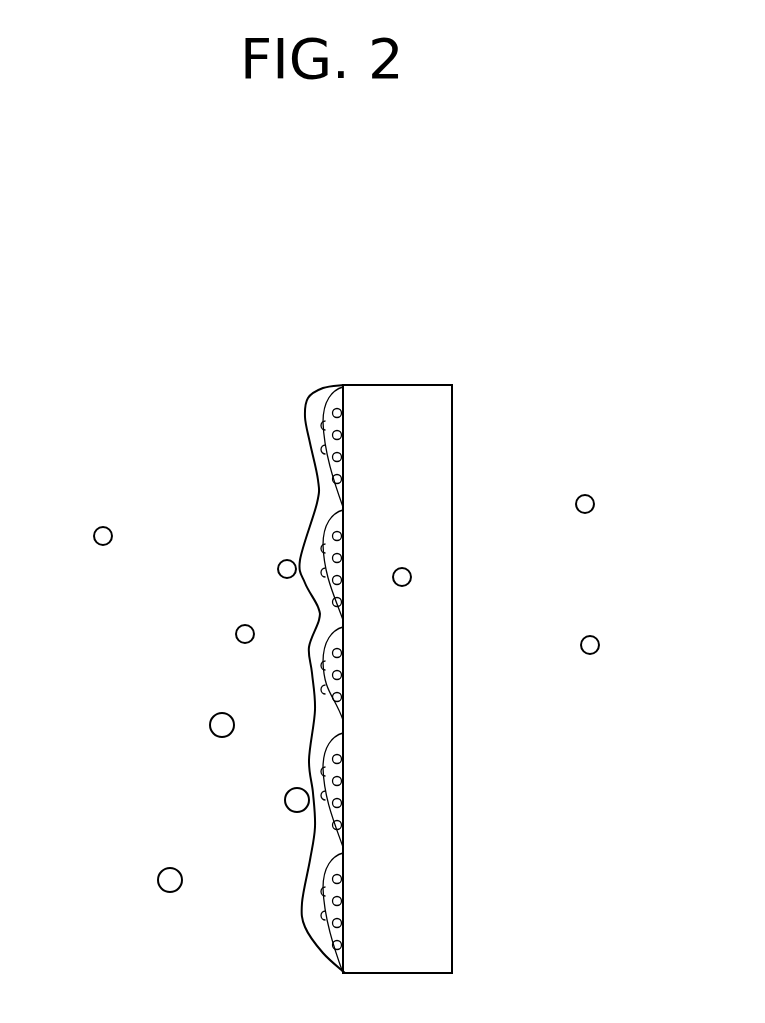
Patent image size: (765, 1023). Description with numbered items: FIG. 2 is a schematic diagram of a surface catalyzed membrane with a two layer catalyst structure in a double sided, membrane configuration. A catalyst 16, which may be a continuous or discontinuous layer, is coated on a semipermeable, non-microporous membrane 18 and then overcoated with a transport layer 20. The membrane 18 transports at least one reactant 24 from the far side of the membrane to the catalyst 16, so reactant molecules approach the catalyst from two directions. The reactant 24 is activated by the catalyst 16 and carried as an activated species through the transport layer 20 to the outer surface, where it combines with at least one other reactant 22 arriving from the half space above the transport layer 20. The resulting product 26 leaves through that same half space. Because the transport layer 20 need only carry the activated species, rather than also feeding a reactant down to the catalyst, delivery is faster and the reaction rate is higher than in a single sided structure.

The catalyst layer 16 is at (318, 405).
The semipermeable non-microporous membrane 18 is at (387, 363).
The transport layer 20 is at (295, 496).
The reactant 22 is at (262, 575).
The reactant 24 is at (439, 578).
The product 26 is at (269, 803).